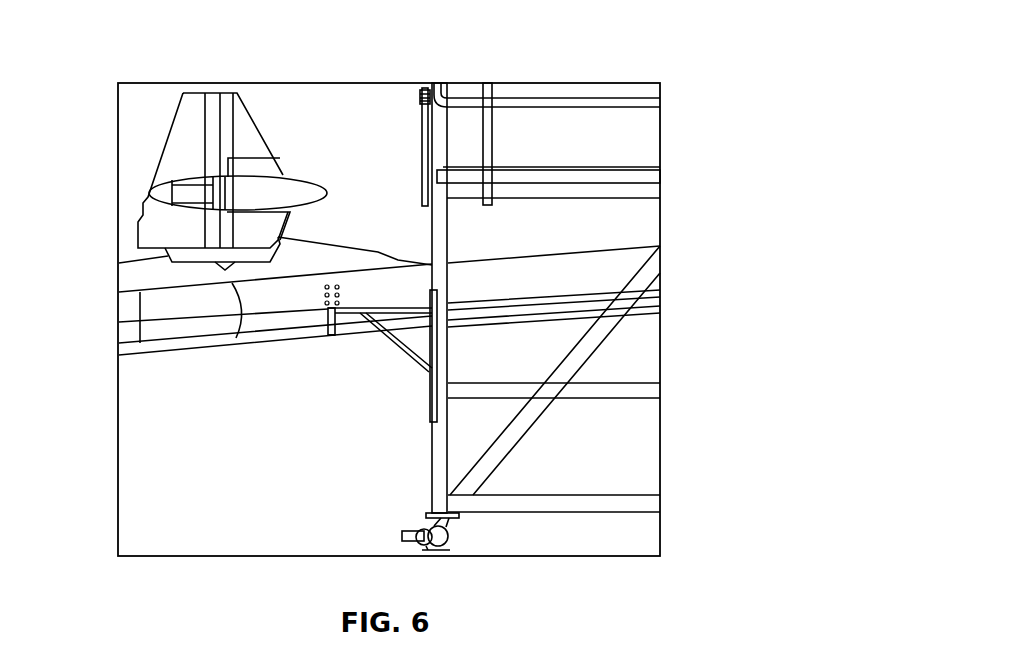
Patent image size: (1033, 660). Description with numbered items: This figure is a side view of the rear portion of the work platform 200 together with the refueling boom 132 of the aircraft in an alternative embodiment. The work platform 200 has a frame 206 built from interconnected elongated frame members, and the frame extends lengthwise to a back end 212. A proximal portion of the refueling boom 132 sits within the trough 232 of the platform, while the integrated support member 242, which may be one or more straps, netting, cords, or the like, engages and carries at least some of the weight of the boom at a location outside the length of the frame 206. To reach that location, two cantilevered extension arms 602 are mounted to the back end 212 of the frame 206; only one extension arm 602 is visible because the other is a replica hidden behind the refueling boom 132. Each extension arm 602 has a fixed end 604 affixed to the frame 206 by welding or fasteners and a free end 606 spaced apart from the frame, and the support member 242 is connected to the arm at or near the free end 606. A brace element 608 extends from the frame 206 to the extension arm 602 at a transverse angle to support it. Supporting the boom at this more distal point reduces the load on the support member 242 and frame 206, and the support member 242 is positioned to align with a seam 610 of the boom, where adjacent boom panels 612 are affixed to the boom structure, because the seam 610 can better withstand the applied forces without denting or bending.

The work platform 200 is at (608, 56).
The trough 232 is at (640, 228).
The frame 206 is at (473, 492).
The back end 212 is at (430, 456).
The fixed end 604 is at (431, 312).
The extension arm 602 is at (387, 311).
The free end 606 is at (328, 308).
The seam 610 is at (334, 286).
The brace element 608 is at (413, 363).
The support member 242 is at (333, 336).
The boom panel 612 is at (312, 317).
The refueling boom 132 is at (198, 318).